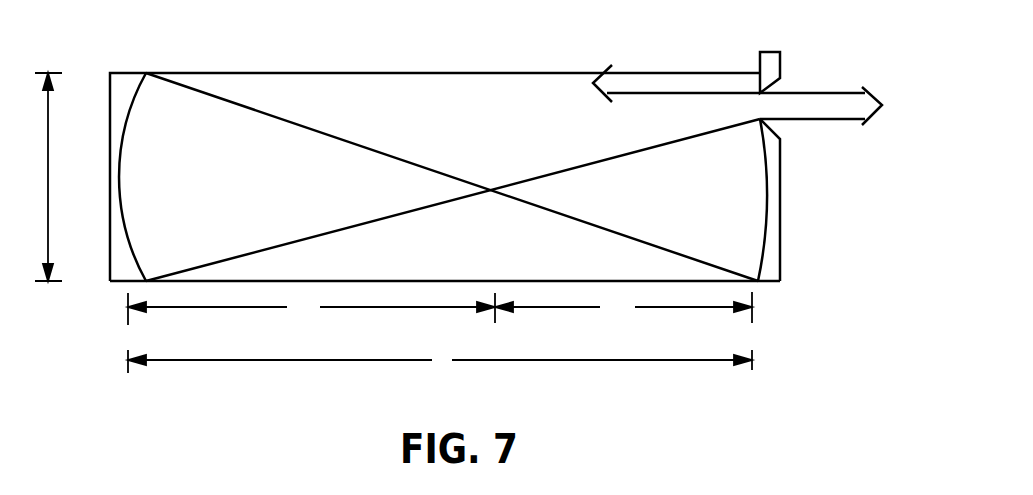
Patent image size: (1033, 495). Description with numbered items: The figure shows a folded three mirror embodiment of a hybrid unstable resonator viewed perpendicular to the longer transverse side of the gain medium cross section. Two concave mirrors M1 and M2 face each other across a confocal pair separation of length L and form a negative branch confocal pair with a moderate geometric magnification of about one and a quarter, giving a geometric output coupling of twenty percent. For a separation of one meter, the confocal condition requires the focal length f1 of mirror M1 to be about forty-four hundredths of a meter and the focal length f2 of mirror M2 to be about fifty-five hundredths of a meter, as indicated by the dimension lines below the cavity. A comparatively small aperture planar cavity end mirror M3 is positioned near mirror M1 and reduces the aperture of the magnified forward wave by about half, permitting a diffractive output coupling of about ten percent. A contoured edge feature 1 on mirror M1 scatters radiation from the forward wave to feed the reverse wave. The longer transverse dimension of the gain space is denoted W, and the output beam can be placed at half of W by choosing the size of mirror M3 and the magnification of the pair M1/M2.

The mirror M1 is at (786, 200).
The mirror M2 is at (107, 177).
The mirror M3 is at (789, 72).
The longer transverse dimension of the gain space cross section W is at (48, 177).
The focal length of mirror M1 f1 is at (623, 306).
The focal length of mirror M2 f2 is at (311, 307).
The confocal pair separation length L is at (440, 358).
The contoured edge feature 1 is at (768, 310).